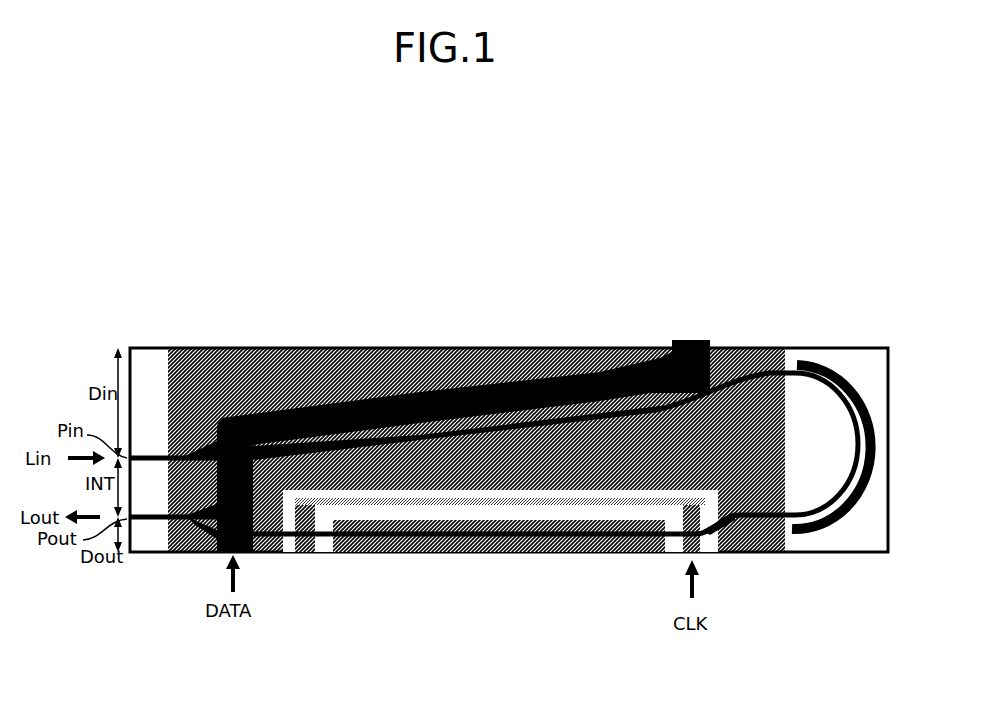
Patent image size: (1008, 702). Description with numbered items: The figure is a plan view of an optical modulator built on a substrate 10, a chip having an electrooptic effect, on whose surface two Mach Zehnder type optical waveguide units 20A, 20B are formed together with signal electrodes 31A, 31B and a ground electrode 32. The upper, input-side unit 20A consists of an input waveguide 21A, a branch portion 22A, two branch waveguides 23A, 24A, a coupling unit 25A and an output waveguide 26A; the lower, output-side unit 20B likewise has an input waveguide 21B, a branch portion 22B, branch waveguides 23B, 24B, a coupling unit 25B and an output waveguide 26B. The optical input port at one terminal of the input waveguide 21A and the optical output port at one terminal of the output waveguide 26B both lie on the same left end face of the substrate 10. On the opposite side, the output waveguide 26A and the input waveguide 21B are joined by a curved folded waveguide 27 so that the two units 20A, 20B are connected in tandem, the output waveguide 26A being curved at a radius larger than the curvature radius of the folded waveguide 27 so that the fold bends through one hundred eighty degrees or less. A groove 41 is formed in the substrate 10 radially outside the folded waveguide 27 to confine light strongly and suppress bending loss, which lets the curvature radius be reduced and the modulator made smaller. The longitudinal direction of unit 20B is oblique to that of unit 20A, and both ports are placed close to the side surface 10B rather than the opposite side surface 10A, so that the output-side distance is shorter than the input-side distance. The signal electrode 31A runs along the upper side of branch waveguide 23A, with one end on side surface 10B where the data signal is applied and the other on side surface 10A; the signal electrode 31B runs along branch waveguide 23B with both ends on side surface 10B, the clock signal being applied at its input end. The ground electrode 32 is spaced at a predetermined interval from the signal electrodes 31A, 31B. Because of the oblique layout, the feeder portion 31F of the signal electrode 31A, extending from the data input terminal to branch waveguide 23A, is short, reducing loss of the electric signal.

The substrate 10 is at (840, 551).
The side surface 10A is at (148, 348).
The side surface 10B is at (148, 553).
The Mach Zehnder type optical waveguide unit 20A is at (380, 390).
The Mach Zehnder type optical waveguide unit 20B is at (556, 541).
The input waveguide 21A is at (146, 457).
The input waveguide 21B is at (779, 553).
The branch portion 22A is at (196, 440).
The branch portion 22B is at (741, 553).
The branch waveguide 23A is at (448, 375).
The branch waveguide 23B is at (500, 553).
The branch waveguide 24A is at (500, 376).
The branch waveguide 24B is at (464, 553).
The coupling unit 25A is at (727, 368).
The coupling unit 25B is at (207, 553).
The output waveguide 26A is at (762, 370).
The output waveguide 26B is at (168, 553).
The curved folded waveguide 27 is at (845, 397).
The signal electrode 31A is at (335, 392).
The signal electrode 31B is at (382, 553).
The feeder portion 31F is at (252, 553).
The ground electrode 32 is at (578, 348).
The groove 41 is at (842, 362).